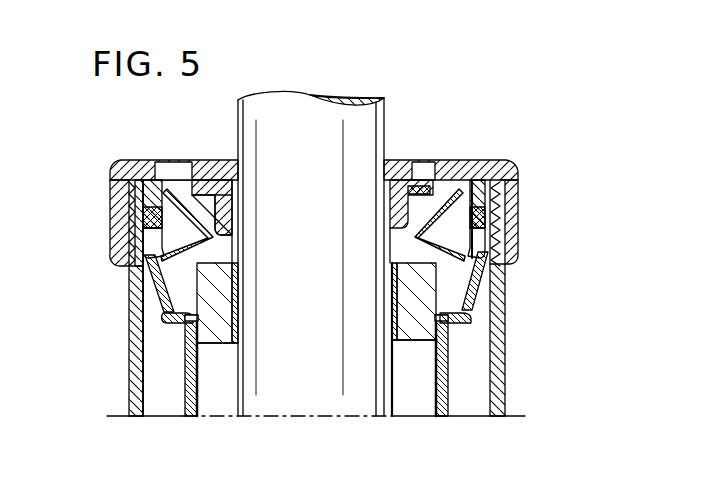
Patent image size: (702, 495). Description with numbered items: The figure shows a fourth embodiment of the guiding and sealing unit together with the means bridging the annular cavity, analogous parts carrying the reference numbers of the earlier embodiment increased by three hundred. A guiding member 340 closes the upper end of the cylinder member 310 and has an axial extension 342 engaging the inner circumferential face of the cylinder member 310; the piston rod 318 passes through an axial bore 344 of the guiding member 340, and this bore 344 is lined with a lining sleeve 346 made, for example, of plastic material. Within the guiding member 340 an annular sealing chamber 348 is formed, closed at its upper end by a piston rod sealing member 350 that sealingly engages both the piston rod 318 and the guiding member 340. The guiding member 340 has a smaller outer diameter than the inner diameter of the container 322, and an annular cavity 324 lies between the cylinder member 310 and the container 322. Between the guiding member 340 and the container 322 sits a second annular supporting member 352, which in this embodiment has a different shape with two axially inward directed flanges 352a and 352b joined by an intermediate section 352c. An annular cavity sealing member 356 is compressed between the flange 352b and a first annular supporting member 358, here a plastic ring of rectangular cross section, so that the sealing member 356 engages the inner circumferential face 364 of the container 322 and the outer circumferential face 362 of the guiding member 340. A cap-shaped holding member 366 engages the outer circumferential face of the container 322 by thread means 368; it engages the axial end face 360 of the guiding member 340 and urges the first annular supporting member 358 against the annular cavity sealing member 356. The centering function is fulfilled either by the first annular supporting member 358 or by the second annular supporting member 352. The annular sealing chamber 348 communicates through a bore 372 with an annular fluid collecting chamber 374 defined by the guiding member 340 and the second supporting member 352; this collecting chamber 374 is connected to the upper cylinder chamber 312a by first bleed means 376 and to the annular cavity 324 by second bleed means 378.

The cylinder member 310 is at (190, 417).
The upper cylinder chamber 312a is at (420, 400).
The piston rod 318 is at (310, 408).
The container 322 is at (495, 348).
The annular cavity 324 is at (474, 402).
The guiding member 340 is at (472, 273).
The axial extension 342 is at (233, 354).
The axial bore 344 is at (402, 250).
The lining sleeve 346 is at (393, 320).
The annular sealing chamber 348 is at (228, 242).
The piston rod sealing member 350 is at (240, 168).
The second annular supporting member 352 is at (468, 302).
The flange 352a is at (131, 351).
The flange 352b is at (136, 244).
The intermediate section 352c is at (165, 313).
The annular cavity sealing member 356 is at (497, 222).
The first annular supporting member 358 is at (490, 180).
The axial end face 360 is at (447, 178).
The outer circumferential face 362 is at (182, 185).
The inner circumferential face 364 is at (146, 397).
The holding member 366 is at (130, 170).
The thread means 368 is at (121, 210).
The bore 372 is at (208, 270).
The annular fluid collecting chamber 374 is at (180, 292).
The first bleed means 376 is at (212, 345).
The second bleed means 378 is at (153, 290).